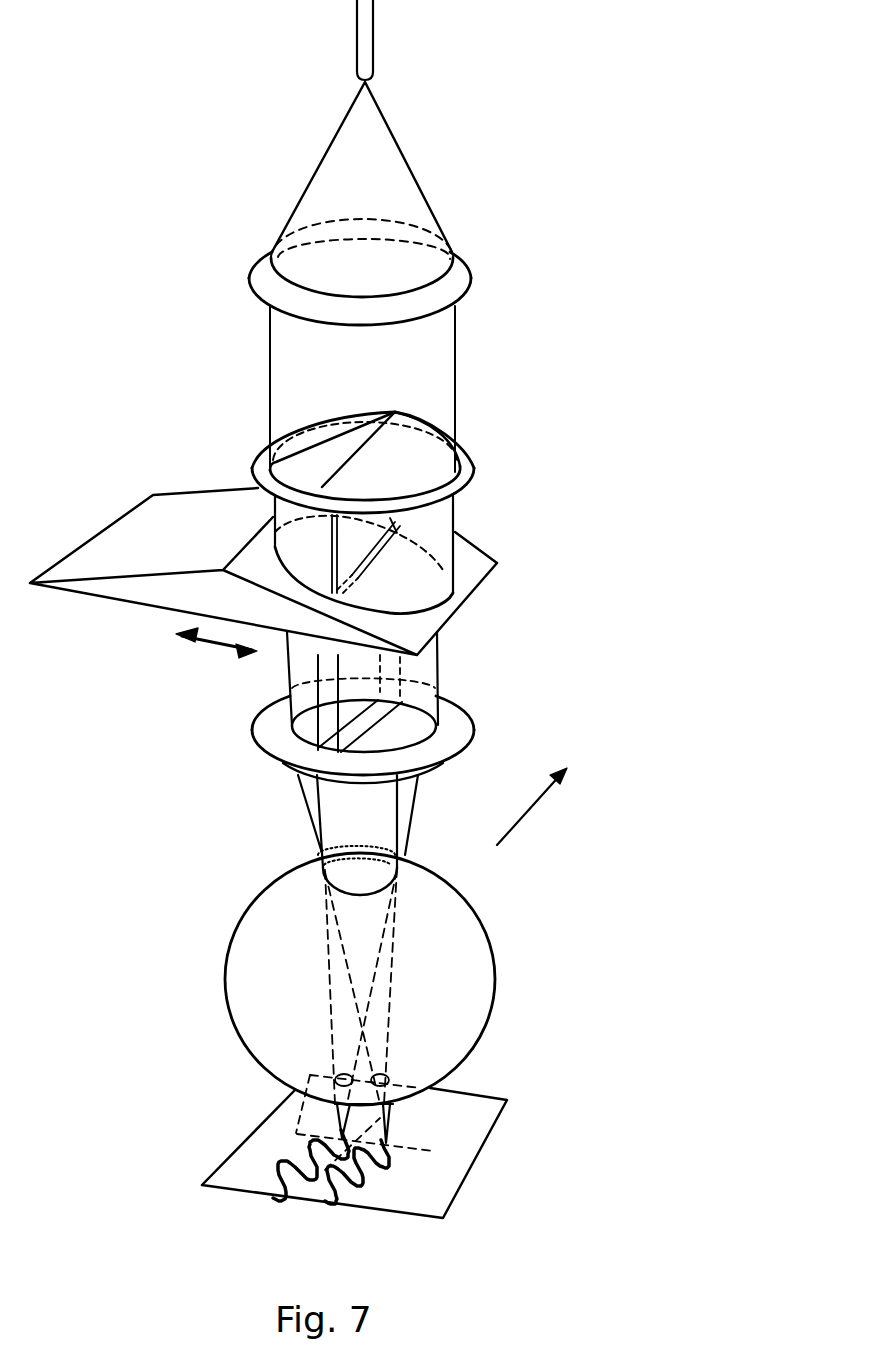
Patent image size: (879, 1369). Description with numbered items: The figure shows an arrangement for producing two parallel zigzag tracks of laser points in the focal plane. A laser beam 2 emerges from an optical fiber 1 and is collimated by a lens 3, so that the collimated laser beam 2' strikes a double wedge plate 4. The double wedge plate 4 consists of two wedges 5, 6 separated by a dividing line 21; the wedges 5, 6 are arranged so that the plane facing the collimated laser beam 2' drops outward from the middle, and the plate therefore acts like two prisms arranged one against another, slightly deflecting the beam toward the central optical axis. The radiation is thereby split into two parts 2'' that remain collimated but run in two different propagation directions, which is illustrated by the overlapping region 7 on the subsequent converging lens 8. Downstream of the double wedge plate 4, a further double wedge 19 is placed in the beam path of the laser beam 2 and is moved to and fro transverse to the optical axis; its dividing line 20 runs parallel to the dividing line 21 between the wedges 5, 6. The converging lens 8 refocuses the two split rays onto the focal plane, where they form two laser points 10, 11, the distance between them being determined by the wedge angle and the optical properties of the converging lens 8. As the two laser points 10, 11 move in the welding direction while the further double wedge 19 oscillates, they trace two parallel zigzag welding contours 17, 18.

The optical fiber 1 is at (372, 31).
The laser beam 2 is at (390, 167).
The lens 3 is at (457, 290).
The collimated laser beam 2' is at (413, 389).
The double wedge plate 4 is at (470, 481).
The wedge 5 is at (315, 455).
The wedge 6 is at (422, 465).
The dividing line 21 is at (360, 450).
The split radiation parts 2'' is at (418, 544).
The dividing line 20 is at (252, 539).
The further double wedge 19 is at (113, 595).
The converging lens 8 is at (463, 727).
The overlapping region 7 is at (290, 760).
The laser point 10 is at (342, 1138).
The laser point 11 is at (387, 1143).
The zigzag welding contour 17 is at (270, 1175).
The zigzag welding contour 18 is at (356, 1193).